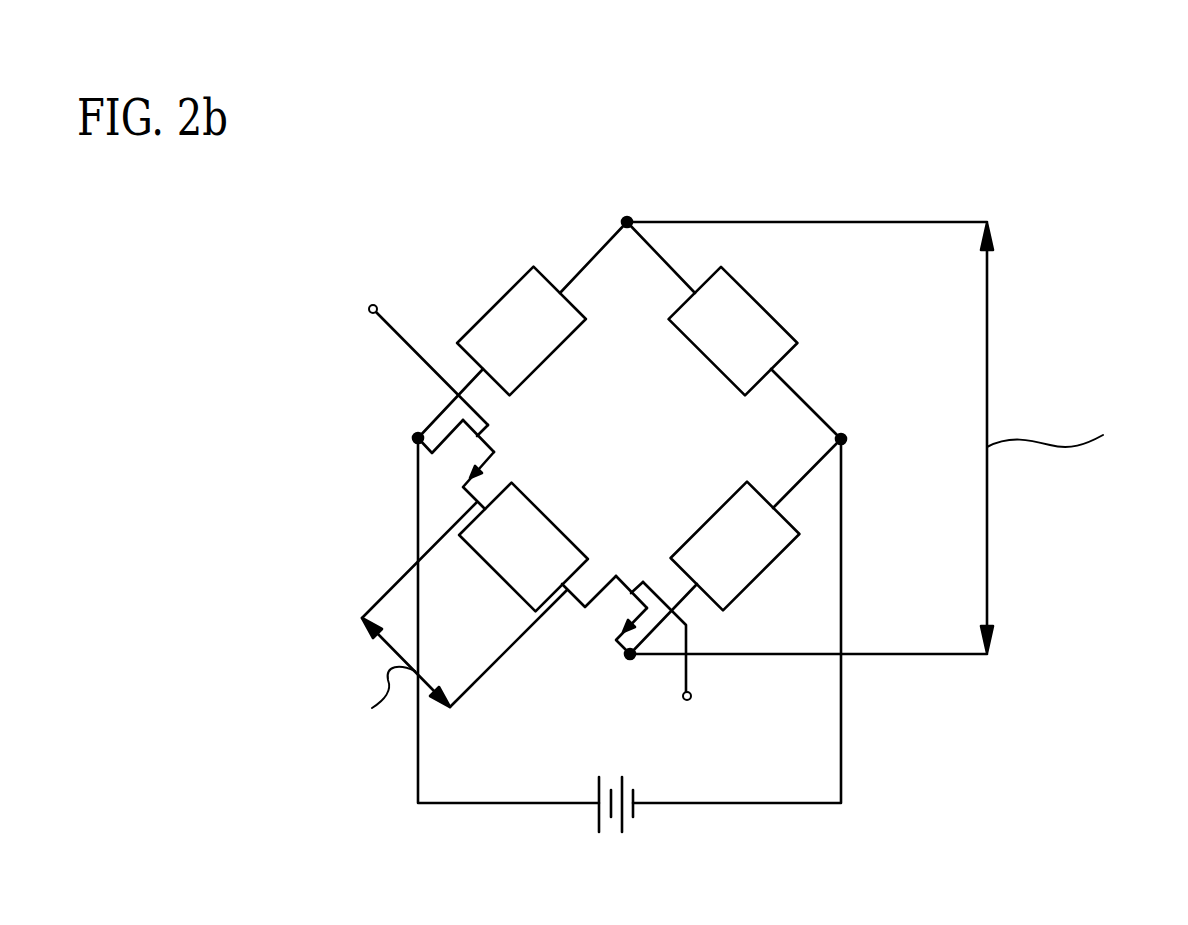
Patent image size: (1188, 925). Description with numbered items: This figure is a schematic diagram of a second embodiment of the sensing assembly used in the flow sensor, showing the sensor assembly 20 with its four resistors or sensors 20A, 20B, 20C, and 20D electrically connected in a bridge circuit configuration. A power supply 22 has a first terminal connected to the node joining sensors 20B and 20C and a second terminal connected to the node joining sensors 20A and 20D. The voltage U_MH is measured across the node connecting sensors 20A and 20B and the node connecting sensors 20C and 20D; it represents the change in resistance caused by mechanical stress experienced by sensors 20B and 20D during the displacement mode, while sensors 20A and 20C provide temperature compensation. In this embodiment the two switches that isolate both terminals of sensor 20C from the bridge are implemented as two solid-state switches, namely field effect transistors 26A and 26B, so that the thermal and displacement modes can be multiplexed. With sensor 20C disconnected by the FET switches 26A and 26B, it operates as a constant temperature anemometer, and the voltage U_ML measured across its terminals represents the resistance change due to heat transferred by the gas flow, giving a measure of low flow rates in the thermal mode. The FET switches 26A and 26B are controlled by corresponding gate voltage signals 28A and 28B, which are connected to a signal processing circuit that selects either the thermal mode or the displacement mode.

The sensor assembly 20 is at (557, 127).
The sensor 20A is at (768, 302).
The sensor 20B is at (497, 302).
The sensor 20C is at (544, 512).
The sensor 20D is at (762, 578).
The power supply 22 is at (625, 823).
The field effect transistor 26A is at (440, 444).
The field effect transistor 26B is at (592, 600).
The gate voltage signal 28A is at (373, 305).
The gate voltage signal 28B is at (692, 694).